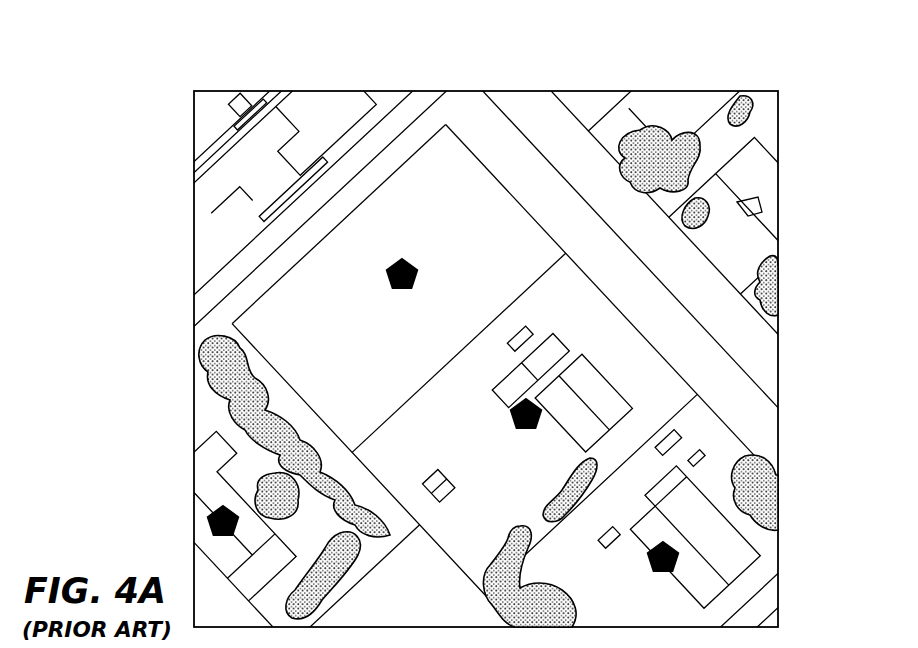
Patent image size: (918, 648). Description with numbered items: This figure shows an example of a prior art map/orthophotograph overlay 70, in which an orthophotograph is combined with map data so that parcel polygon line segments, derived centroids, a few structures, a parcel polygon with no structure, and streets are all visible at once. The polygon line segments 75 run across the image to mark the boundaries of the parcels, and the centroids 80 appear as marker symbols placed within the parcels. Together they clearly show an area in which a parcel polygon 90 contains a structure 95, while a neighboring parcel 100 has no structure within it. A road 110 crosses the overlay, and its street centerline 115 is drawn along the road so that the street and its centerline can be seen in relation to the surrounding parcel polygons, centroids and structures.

The map/orthophotograph overlay 70 is at (198, 62).
The polygon line segments 75 is at (458, 567).
The centroids 80 is at (392, 284).
The parcel polygon 90 is at (673, 400).
The structure 95 is at (617, 392).
The parcel 100 is at (245, 312).
The road 110 is at (707, 289).
The street centerline 115 is at (519, 124).